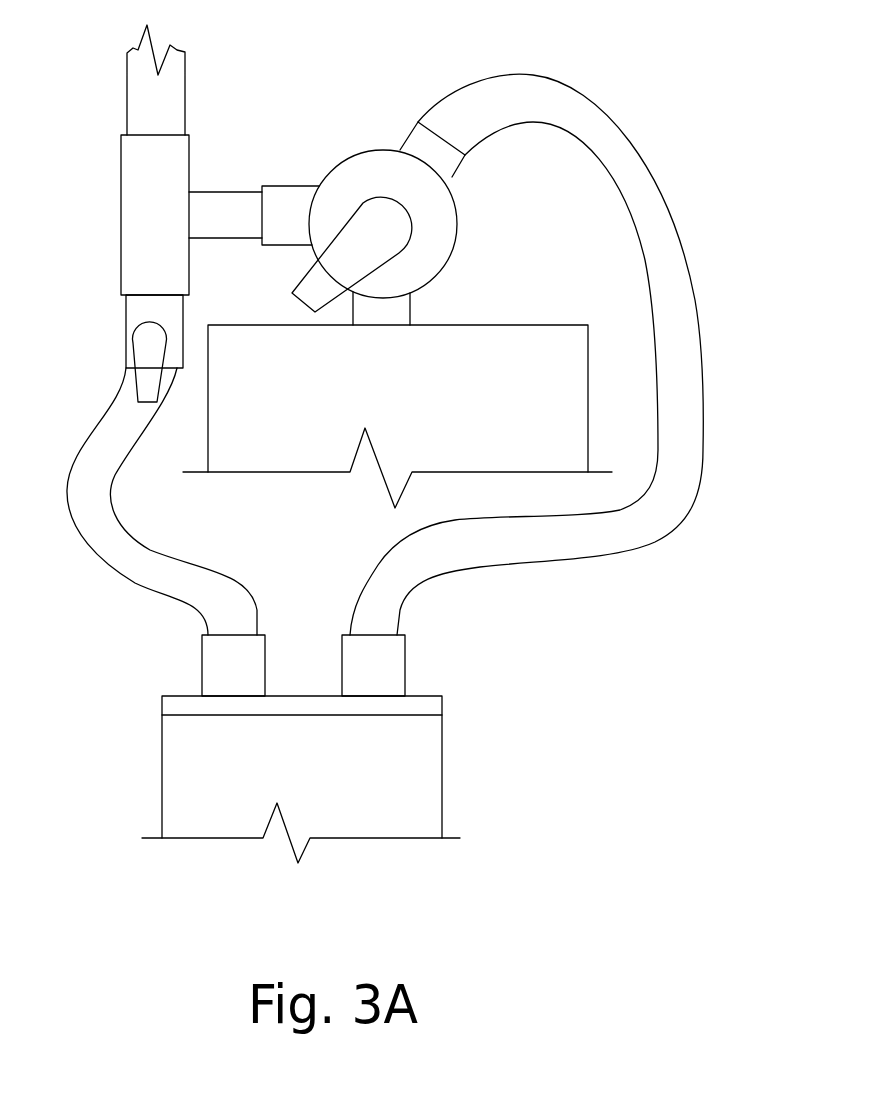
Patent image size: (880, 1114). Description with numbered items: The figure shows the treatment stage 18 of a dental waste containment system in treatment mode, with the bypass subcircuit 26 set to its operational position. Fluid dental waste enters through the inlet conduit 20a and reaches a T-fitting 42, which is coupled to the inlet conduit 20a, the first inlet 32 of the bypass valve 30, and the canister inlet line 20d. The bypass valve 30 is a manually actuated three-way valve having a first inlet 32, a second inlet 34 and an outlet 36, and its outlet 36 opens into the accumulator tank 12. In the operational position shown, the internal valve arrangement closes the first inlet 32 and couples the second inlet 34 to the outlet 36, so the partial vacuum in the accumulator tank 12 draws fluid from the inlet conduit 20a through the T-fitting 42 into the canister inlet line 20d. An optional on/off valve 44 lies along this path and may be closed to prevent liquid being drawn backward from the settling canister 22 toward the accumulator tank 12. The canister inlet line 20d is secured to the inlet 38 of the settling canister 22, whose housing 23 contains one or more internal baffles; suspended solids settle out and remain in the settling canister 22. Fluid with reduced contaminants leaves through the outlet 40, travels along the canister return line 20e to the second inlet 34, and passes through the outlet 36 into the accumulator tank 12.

The accumulator tank 12 is at (516, 323).
The treatment stage 18 is at (456, 597).
The inlet conduit 20a is at (133, 95).
The canister inlet line 20d is at (133, 531).
The canister return line 20e is at (704, 437).
The settling canister 22 is at (432, 780).
The housing 23 is at (428, 745).
The bypass subcircuit 26 is at (277, 130).
The bypass valve 30 is at (454, 242).
The first inlet 32 is at (289, 195).
The second inlet 34 is at (449, 164).
The outlet 36 is at (404, 308).
The inlet 38 is at (210, 672).
The outlet 40 is at (388, 670).
The T-fitting 42 is at (128, 217).
The on/off valve 44 is at (135, 311).